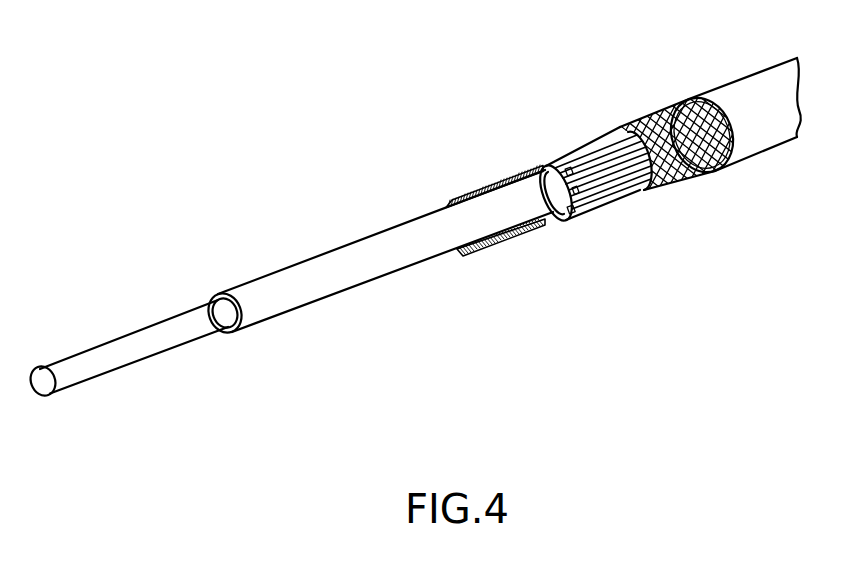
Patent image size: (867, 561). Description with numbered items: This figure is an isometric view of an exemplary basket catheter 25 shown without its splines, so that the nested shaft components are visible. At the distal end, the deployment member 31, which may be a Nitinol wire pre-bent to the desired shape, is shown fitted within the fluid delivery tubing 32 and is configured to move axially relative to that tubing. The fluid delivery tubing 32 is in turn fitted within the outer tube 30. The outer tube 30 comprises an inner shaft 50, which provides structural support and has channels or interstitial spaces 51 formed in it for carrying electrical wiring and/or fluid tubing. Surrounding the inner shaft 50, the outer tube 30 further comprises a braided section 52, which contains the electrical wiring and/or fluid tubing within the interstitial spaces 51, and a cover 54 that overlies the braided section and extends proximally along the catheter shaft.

The basket catheter 25 is at (336, 162).
The outer tube 30 is at (623, 121).
The deployment member 31 is at (133, 362).
The fluid delivery tubing 32 is at (343, 293).
The inner shaft 50 is at (597, 210).
The interstitial spaces 51 is at (585, 163).
The braided section 52 is at (688, 170).
The cover 54 is at (767, 140).